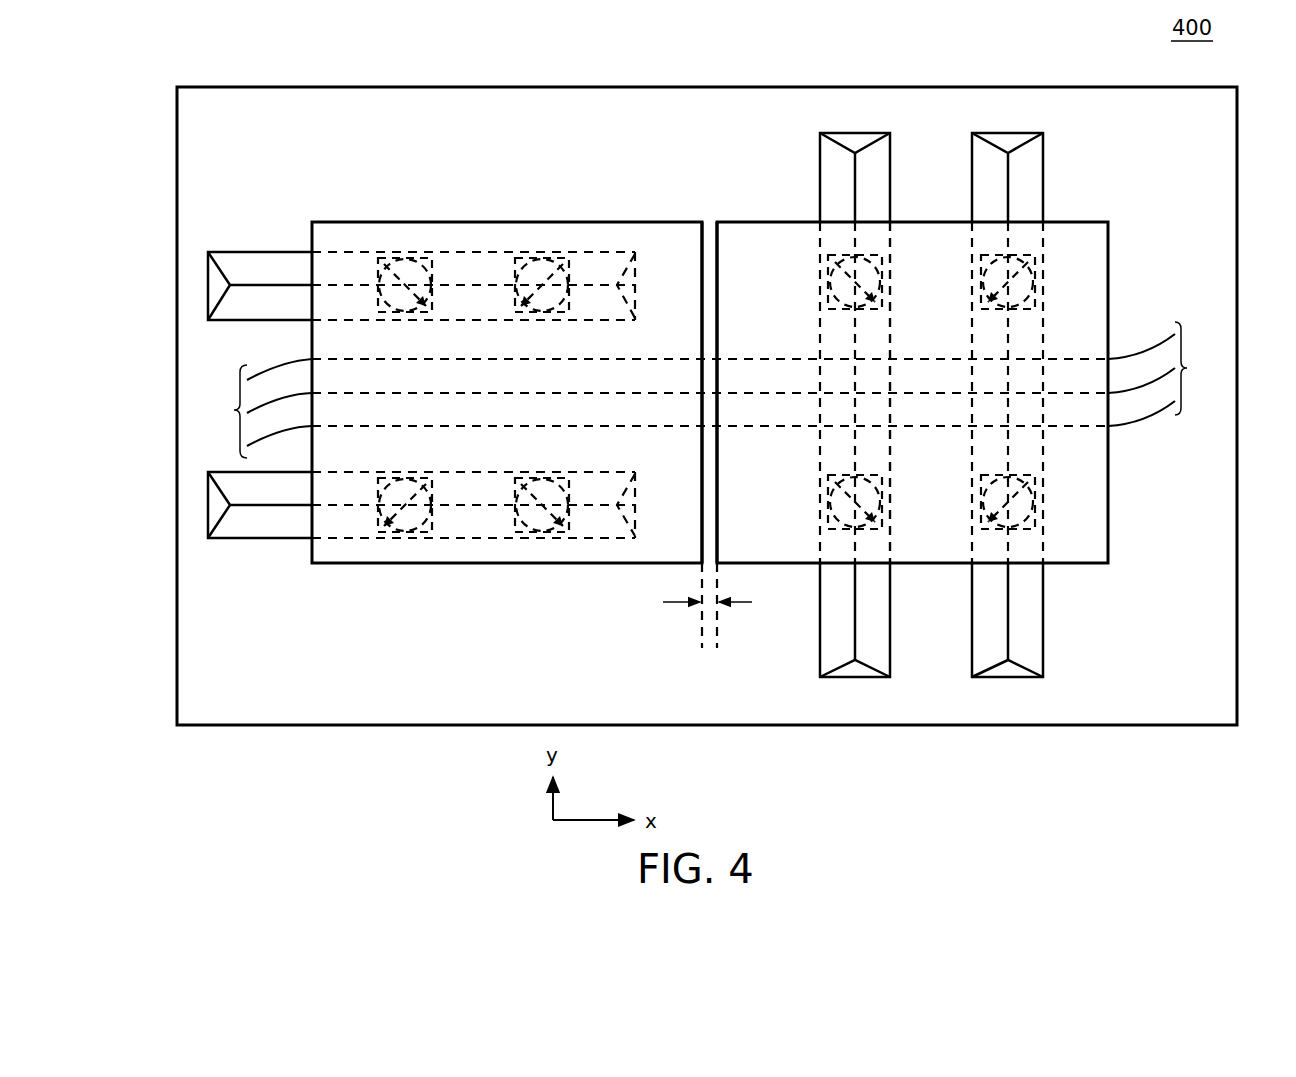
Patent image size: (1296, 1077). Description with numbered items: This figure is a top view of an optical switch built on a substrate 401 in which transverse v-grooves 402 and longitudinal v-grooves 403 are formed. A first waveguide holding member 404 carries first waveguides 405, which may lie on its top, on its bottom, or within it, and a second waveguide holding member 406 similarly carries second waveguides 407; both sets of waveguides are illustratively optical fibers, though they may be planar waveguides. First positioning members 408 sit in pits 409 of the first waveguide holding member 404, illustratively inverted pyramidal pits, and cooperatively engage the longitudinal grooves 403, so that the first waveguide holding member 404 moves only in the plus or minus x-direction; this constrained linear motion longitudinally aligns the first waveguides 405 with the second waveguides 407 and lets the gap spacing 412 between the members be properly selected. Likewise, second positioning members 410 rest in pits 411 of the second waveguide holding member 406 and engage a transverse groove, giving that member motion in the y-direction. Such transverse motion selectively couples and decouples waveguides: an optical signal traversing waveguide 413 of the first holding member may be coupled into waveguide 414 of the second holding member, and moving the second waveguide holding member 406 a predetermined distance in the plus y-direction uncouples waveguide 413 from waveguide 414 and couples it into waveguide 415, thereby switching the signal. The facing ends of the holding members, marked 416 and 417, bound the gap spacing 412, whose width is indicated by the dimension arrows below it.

The substrate 401 is at (1222, 133).
The transverse v-grooves 402 is at (873, 158).
The longitudinal v-grooves 403 is at (277, 250).
The first waveguide holding member 404 is at (638, 228).
The first waveguides 405 is at (251, 408).
The second waveguide holding member 406 is at (1090, 252).
The second waveguides 407 is at (1170, 374).
The first positioning members 408 is at (400, 253).
The pits 409 is at (556, 262).
The second positioning members 410 is at (830, 282).
The pits 411 is at (878, 258).
The gap spacing 412 is at (663, 603).
The waveguide 413 is at (574, 392).
The waveguide 414 is at (740, 392).
The waveguide 415 is at (762, 428).
The first block facet 416 is at (703, 230).
The second block facet 417 is at (716, 230).